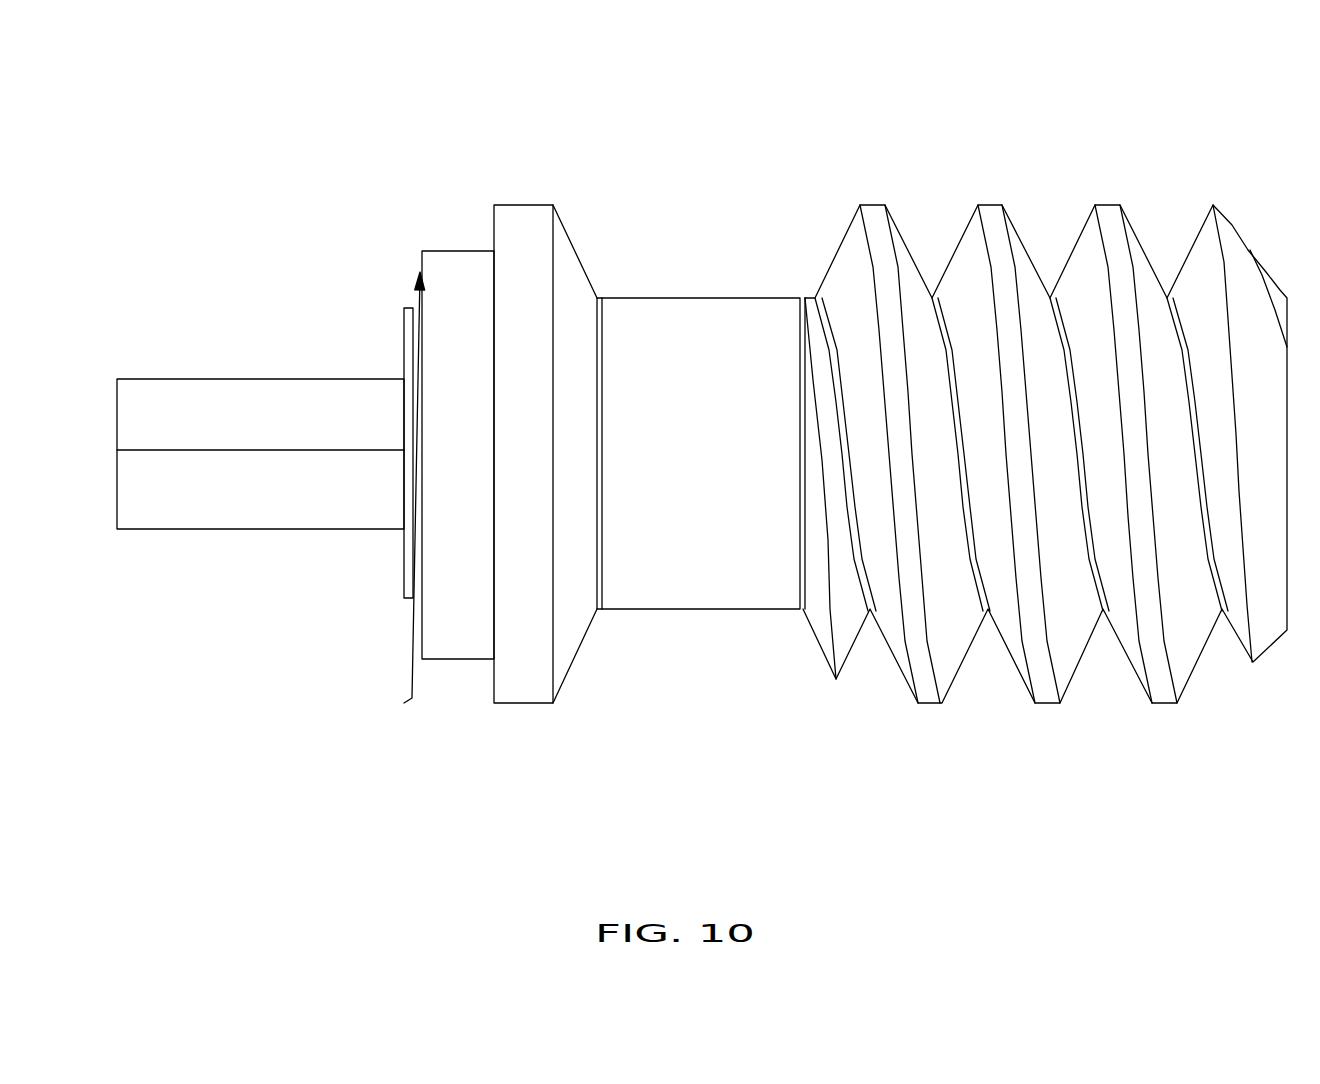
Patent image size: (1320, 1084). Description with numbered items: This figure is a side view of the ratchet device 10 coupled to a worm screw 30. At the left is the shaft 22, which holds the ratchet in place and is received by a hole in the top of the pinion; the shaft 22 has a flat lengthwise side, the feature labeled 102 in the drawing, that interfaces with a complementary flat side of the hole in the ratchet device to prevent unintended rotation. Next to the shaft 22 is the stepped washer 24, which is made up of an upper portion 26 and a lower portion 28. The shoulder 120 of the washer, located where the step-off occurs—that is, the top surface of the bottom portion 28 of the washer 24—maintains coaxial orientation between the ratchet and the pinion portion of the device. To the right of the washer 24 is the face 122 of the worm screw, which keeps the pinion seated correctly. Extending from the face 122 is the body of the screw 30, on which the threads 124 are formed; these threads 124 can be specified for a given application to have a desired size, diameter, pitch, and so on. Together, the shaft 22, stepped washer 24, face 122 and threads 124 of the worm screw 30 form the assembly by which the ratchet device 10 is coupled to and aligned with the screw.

The ratchet device 10 is at (455, 145).
The shaft 22 is at (124, 450).
The stepped washer 24 is at (432, 695).
The upper portion 26 is at (387, 333).
The lower portion 28 is at (484, 623).
The worm screw 30 is at (722, 486).
The shank centerline 102 is at (373, 415).
The shoulder 120 is at (388, 495).
The face 122 is at (497, 538).
The threads 124 is at (906, 690).